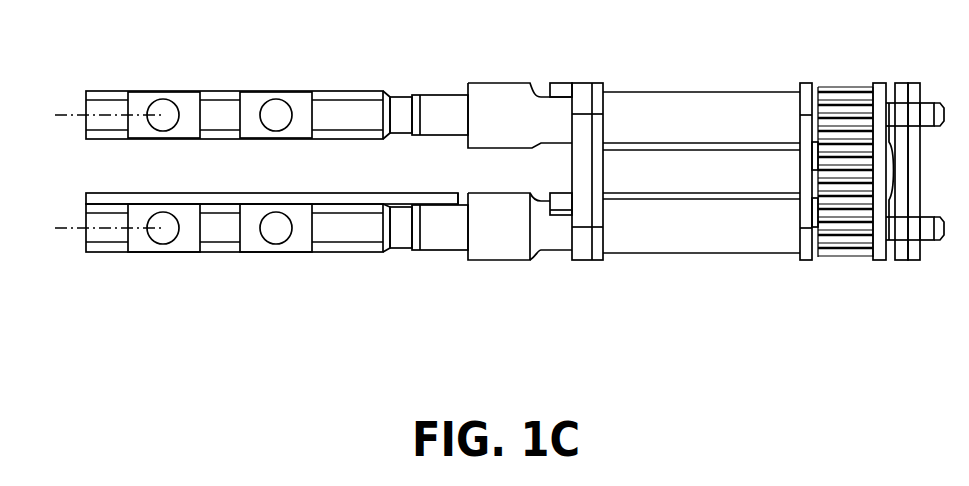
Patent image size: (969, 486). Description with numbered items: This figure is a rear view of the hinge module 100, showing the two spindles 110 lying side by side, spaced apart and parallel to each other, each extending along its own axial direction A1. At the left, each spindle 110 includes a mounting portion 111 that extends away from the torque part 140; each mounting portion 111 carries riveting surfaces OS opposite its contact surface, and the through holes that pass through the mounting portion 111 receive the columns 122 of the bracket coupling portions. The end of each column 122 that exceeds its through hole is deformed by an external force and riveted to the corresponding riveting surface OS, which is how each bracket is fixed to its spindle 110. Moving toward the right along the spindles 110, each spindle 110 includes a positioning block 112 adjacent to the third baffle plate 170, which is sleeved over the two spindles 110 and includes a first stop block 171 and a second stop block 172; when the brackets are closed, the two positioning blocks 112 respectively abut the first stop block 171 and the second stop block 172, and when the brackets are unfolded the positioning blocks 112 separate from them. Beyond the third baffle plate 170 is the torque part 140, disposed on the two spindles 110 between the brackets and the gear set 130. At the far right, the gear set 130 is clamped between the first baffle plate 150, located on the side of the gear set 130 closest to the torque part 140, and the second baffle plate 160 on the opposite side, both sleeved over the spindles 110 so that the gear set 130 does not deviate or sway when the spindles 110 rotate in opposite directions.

The hinge module 100 is at (836, 340).
The spindle 110 is at (433, 125).
The mounting portion 111 is at (101, 123).
The positioning block 112 is at (495, 125).
The column 122 is at (278, 115).
The gear set 130 is at (848, 115).
The torque part 140 is at (688, 220).
The first baffle plate 150 is at (805, 212).
The second baffle plate 160 is at (878, 215).
The third baffle plate 170 is at (598, 170).
The first stop block 171 is at (564, 86).
The second stop block 172 is at (563, 203).
The riveting surface OS is at (250, 110).
The axial direction A1 is at (97, 171).